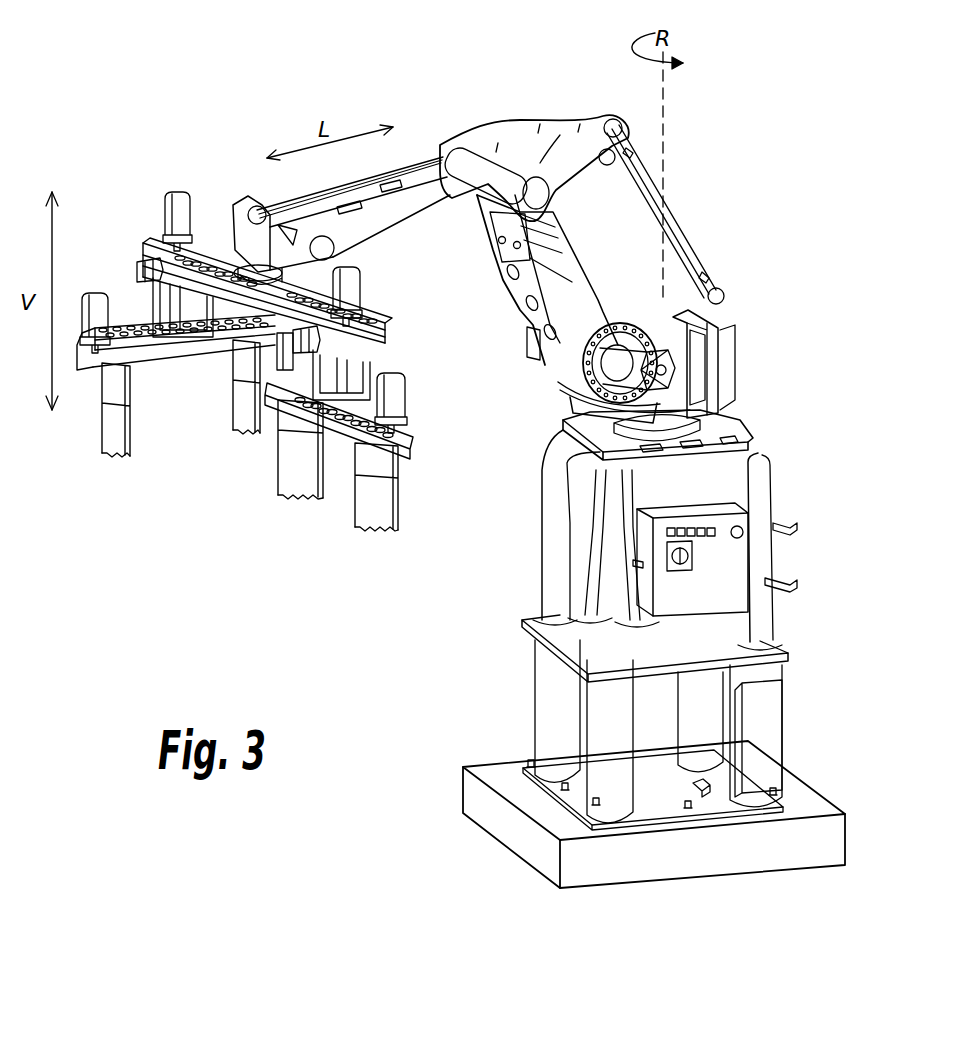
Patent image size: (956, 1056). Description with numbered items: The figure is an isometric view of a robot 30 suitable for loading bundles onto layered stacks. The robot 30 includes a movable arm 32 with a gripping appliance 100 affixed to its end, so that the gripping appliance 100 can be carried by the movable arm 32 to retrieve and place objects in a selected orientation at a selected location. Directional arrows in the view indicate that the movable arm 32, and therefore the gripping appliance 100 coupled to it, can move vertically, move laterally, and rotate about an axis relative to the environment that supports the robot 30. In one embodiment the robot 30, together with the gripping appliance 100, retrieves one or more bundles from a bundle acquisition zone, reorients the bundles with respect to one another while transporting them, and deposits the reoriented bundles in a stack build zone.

The robot 30 is at (724, 220).
The movable arm 32 is at (563, 130).
The gripping appliance 100 is at (207, 240).